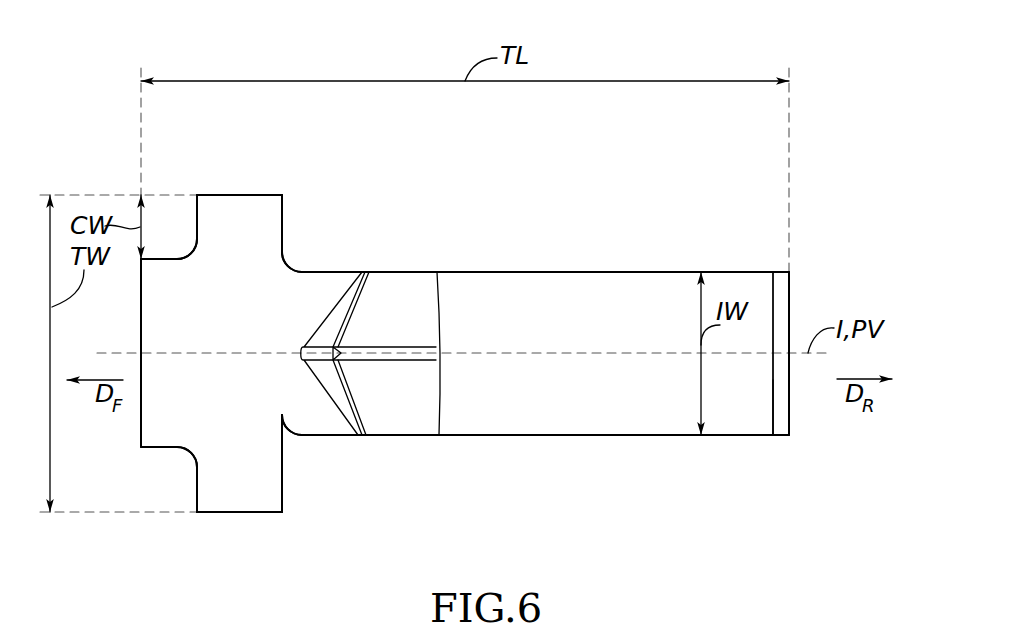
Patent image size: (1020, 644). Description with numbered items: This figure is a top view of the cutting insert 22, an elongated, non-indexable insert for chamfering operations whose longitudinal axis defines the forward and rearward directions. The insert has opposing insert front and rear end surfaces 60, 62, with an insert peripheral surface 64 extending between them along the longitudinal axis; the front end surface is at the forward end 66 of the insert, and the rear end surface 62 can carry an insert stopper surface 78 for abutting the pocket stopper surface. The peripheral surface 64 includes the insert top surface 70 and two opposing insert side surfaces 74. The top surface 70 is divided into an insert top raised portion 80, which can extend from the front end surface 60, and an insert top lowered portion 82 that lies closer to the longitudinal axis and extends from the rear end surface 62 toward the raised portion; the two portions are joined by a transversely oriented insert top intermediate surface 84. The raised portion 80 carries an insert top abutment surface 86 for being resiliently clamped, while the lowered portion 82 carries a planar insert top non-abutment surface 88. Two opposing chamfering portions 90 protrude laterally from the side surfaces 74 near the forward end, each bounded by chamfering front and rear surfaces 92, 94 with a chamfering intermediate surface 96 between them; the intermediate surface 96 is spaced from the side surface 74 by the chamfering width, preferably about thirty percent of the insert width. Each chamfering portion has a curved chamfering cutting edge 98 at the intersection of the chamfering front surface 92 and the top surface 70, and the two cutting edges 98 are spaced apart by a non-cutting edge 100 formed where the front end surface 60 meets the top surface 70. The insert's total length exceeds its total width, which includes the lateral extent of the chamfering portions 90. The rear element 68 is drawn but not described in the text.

The cutting insert 22 is at (802, 198).
The insert front end surface 60 is at (141, 315).
The insert rear end surface 62 is at (790, 308).
The insert peripheral surface 64 is at (583, 271).
The forward end 66 is at (230, 520).
The rear end portion 68 is at (733, 454).
The insert top surface 70 is at (492, 303).
The insert side surface 74 is at (660, 272).
The insert stopper surface 78 is at (783, 411).
The insert top raised portion 80 is at (311, 289).
The insert top lowered portion 82 is at (616, 301).
The insert top intermediate surface 84 is at (440, 411).
The insert top abutment surface 86 is at (390, 315).
The insert top non-abutment surface 88 is at (563, 413).
The chamfering portion 90 is at (290, 193).
The chamfering front surface 92 is at (196, 212).
The chamfering rear surface 94 is at (283, 226).
The chamfering intermediate surface 96 is at (228, 195).
The chamfering cutting edge 98 is at (185, 246).
The non-cutting edge 100 is at (141, 420).